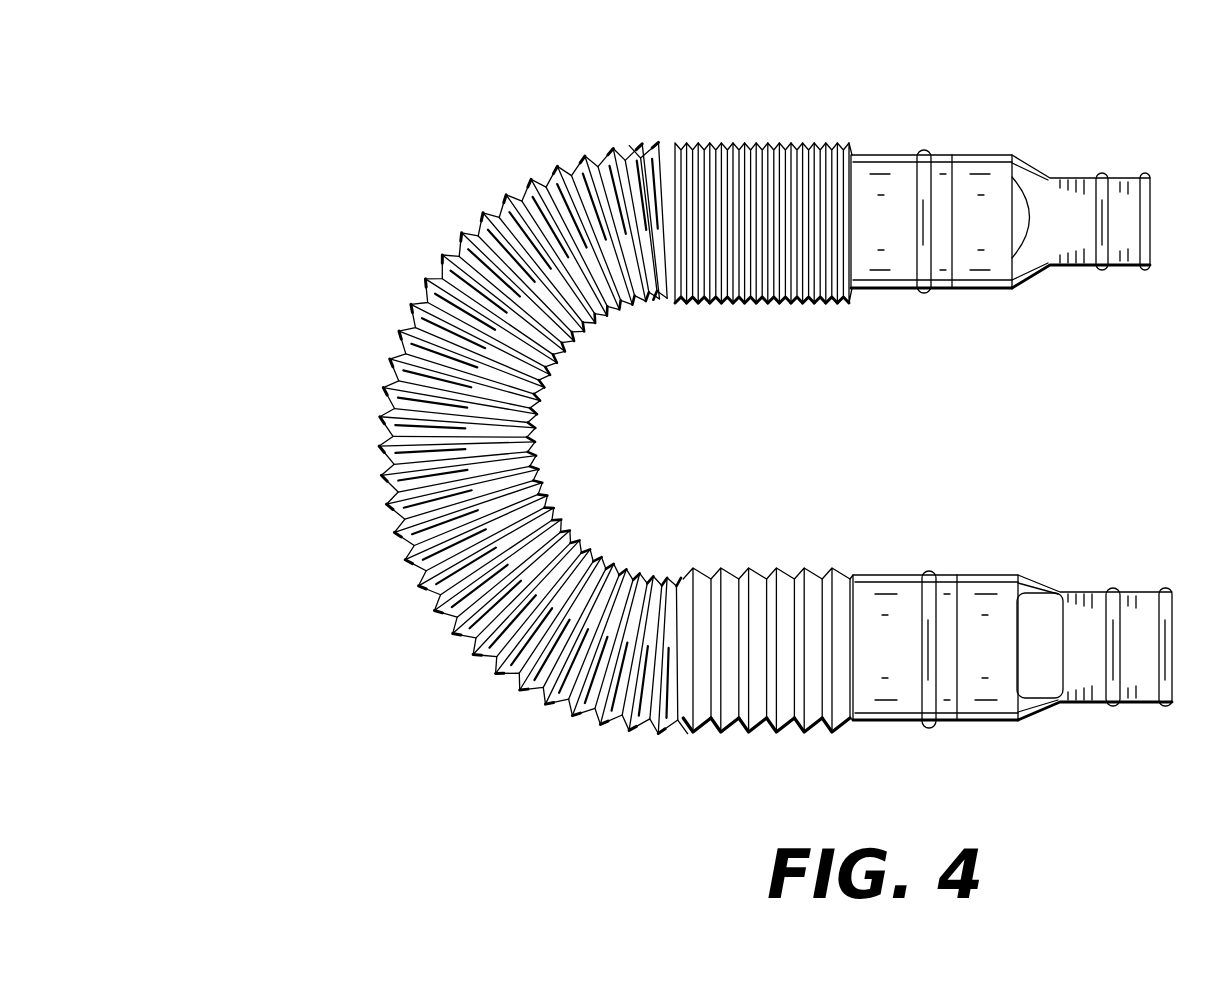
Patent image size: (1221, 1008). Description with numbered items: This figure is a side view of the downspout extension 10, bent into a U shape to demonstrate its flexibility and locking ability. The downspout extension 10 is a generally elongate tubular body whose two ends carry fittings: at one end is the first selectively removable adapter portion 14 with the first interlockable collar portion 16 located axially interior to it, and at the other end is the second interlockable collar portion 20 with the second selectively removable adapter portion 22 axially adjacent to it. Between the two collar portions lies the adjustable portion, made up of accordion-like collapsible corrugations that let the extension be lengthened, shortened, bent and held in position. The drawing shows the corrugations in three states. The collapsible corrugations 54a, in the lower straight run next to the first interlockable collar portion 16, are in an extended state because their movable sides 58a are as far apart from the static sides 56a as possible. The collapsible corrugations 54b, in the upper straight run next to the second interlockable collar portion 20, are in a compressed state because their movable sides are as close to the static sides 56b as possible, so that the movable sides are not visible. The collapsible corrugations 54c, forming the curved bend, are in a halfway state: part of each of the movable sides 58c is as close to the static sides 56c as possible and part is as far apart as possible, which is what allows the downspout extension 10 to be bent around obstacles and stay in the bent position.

The downspout extension 10 is at (245, 428).
The first selectively removable adapter portion 14 is at (1172, 745).
The first interlockable collar portion 16 is at (960, 745).
The second interlockable collar portion 20 is at (953, 127).
The second selectively removable adapter portion 22 is at (1142, 127).
The collapsible corrugations 54a is at (852, 745).
The collapsible corrugations 54b is at (847, 313).
The collapsible corrugations 54c is at (658, 313).
The static sides 56a is at (787, 567).
The static sides 56b is at (755, 140).
The static sides 56c is at (387, 437).
The movable sides 58a is at (770, 567).
The movable sides 58c is at (387, 408).